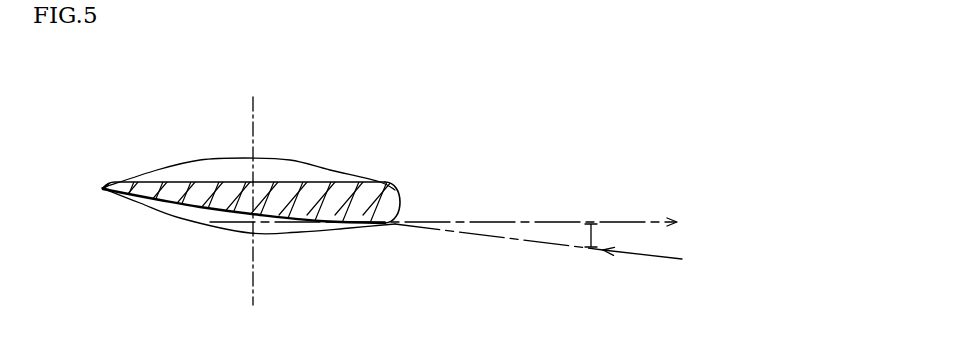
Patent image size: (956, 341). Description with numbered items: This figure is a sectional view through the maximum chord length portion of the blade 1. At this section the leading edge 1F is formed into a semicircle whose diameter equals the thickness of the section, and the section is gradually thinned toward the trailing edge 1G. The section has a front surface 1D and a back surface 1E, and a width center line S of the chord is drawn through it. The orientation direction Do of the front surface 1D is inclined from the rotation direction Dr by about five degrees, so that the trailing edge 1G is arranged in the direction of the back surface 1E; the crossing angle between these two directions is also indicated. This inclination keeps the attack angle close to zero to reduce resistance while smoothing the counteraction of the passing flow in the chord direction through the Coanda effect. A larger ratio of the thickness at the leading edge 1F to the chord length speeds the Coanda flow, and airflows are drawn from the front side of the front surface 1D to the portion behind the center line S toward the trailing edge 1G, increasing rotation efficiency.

The blade 1 is at (172, 142).
The back surface 1E is at (312, 182).
The front surface 1D is at (197, 207).
The leading edge 1F is at (394, 210).
The trailing edge 1G is at (103, 190).
The width center line of chord S is at (253, 281).
The rotation direction Dr is at (463, 221).
The orientation direction of front surface Do is at (559, 249).